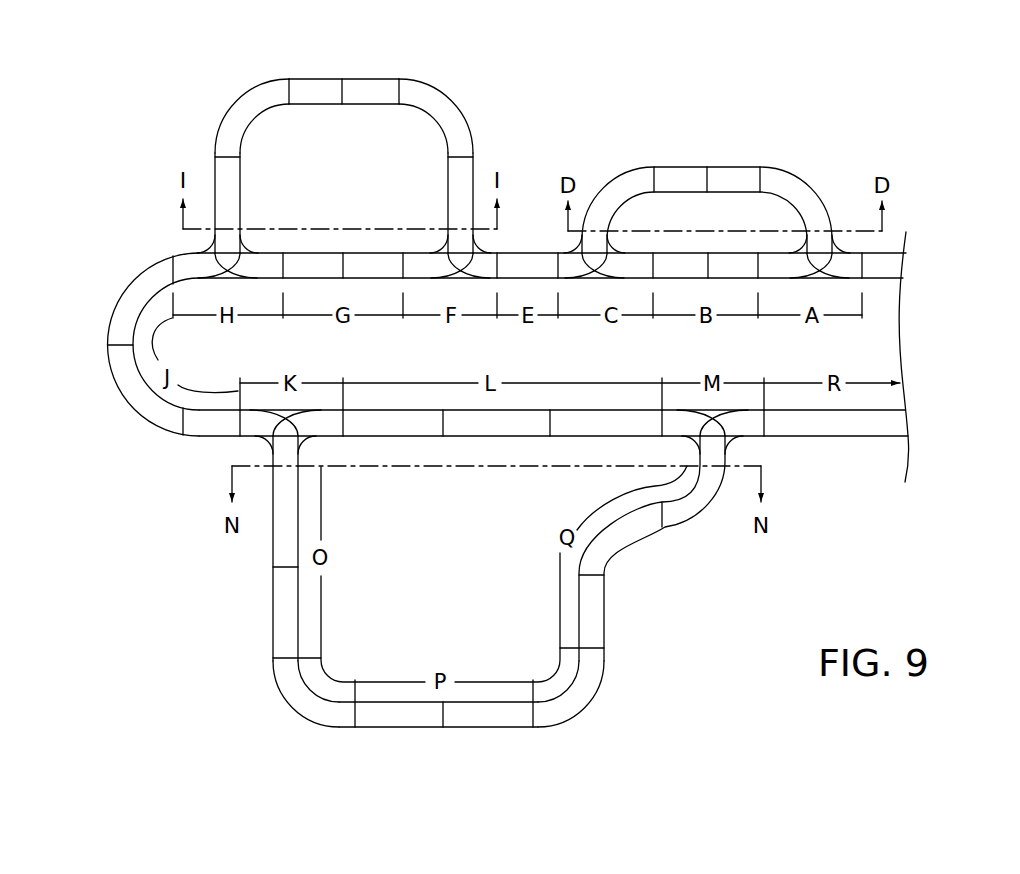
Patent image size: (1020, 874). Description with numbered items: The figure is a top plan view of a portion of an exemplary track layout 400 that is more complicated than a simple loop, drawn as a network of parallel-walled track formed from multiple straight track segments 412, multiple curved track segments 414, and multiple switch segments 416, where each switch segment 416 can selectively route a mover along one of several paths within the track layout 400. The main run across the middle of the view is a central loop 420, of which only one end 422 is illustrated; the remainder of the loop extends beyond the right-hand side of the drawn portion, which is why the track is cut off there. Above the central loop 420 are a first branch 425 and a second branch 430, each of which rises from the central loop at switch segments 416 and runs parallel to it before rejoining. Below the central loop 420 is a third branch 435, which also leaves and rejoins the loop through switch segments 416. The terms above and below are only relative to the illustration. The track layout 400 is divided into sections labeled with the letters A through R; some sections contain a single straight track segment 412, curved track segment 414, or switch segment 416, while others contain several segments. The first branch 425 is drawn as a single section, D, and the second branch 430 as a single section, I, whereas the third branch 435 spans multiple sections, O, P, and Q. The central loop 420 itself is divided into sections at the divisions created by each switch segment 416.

The track layout 400 is at (105, 211).
The straight track segment 412 is at (305, 92).
The curved track segment 414 is at (247, 125).
The switch segment 416 is at (212, 251).
The central loop 420 is at (104, 353).
The end of the central loop 422 is at (135, 393).
The first branch 425 is at (811, 177).
The second branch 430 is at (467, 115).
The third branch 435 is at (260, 562).